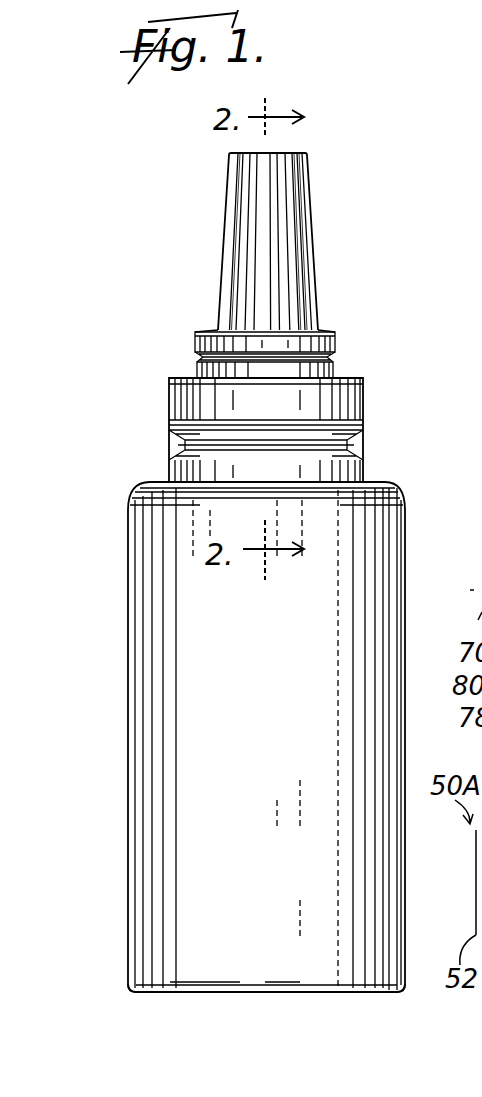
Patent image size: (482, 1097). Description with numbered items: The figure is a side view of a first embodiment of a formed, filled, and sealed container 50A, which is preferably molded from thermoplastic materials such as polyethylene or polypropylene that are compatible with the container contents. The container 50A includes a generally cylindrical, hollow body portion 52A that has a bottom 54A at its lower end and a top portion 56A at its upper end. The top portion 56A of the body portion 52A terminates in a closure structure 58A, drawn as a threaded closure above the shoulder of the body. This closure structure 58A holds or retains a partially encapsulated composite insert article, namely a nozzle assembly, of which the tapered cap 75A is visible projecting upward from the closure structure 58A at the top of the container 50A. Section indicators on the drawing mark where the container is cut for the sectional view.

The container 50A is at (255, 594).
The body portion 52A is at (155, 613).
The bottom 54A is at (235, 995).
The top portion 56A is at (413, 492).
The closure structure 58A is at (352, 332).
The cap 75A is at (289, 229).